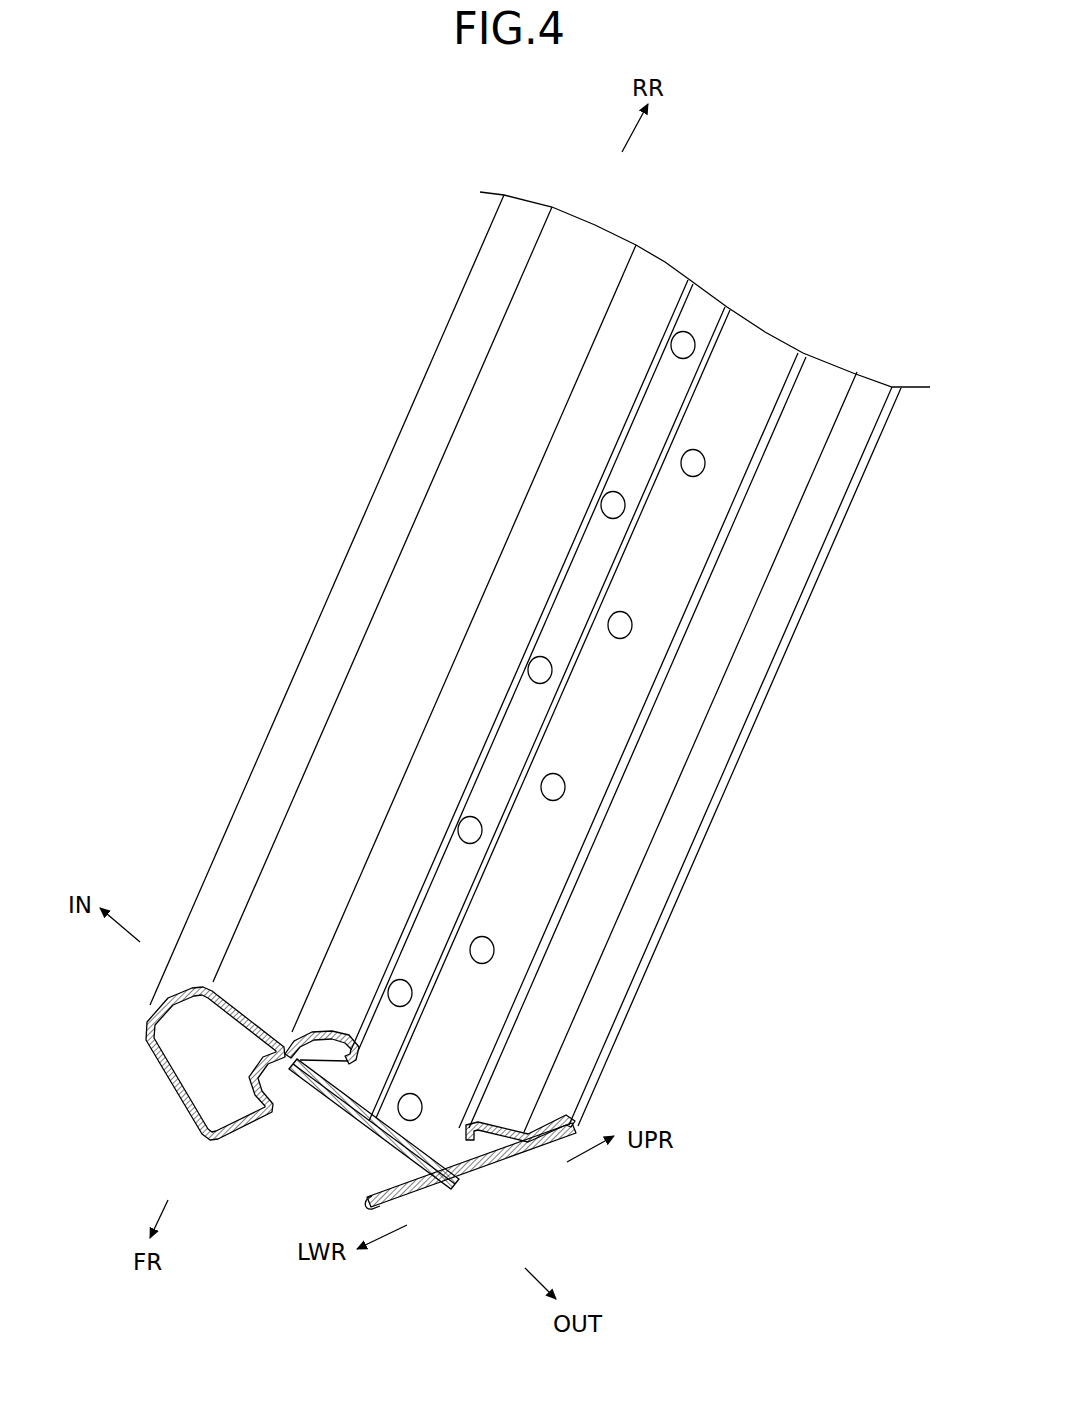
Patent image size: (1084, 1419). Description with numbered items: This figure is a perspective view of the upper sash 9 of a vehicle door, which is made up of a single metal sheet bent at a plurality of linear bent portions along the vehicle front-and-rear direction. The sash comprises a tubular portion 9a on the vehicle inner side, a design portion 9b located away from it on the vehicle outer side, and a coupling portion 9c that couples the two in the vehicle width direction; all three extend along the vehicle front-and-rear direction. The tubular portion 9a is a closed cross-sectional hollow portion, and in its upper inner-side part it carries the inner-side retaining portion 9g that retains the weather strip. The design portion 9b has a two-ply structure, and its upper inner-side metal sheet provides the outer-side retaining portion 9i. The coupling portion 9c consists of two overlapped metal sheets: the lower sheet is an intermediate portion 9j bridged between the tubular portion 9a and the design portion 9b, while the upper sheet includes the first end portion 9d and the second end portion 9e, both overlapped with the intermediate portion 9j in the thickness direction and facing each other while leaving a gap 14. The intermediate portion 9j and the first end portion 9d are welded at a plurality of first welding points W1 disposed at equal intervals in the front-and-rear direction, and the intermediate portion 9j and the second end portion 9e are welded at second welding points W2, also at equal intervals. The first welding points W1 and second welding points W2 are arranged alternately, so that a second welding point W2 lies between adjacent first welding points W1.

The upper sash 9 is at (420, 312).
The tubular portion 9a is at (180, 1048).
The design portion 9b is at (458, 1188).
The coupling portion 9c is at (320, 1103).
The first end portion 9d is at (703, 303).
The second end portion 9e is at (763, 350).
The inner-side retaining portion 9g is at (378, 903).
The outer-side retaining portion 9i is at (475, 1122).
The intermediate portion 9j is at (355, 1117).
The gap 14 is at (395, 1108).
The first welding points W1 is at (538, 667).
The second welding points W2 is at (553, 790).